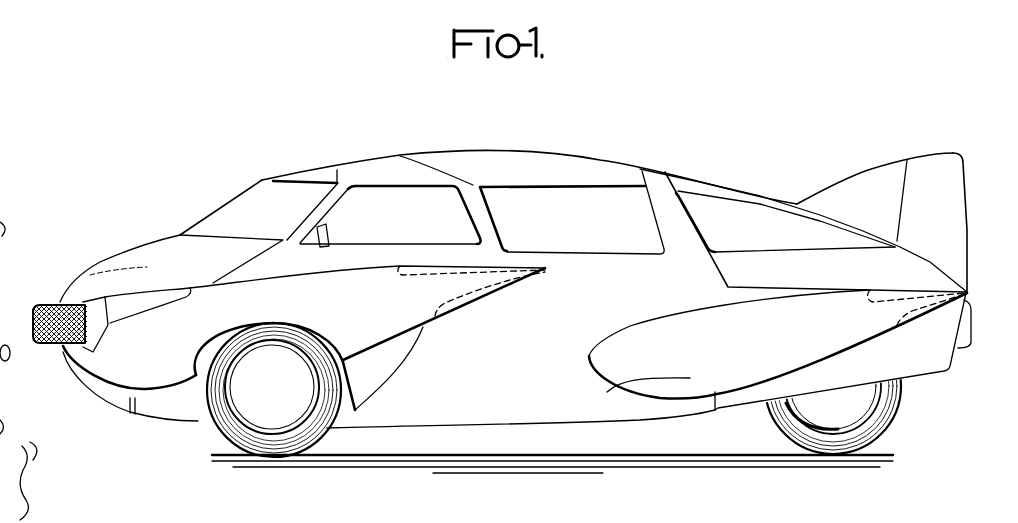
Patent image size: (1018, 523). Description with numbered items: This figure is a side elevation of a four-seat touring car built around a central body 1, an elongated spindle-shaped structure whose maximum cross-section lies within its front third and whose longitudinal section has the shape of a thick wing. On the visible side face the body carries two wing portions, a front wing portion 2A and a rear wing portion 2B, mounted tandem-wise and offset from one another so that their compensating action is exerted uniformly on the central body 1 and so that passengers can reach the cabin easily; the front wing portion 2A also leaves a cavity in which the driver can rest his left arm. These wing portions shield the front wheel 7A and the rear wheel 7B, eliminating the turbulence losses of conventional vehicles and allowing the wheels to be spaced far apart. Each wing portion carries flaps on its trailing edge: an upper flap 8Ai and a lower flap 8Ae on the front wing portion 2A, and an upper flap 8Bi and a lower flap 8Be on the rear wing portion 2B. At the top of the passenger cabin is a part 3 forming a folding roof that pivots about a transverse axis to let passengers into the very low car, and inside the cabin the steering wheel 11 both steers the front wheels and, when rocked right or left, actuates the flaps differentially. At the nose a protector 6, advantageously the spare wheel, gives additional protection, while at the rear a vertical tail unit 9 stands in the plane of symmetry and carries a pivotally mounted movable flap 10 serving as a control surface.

The central body 1 is at (350, 168).
The folding roof 3 is at (527, 170).
The protector 6 is at (54, 306).
The wheel 7A is at (217, 425).
The wheel 7B is at (902, 397).
The front wing portion 2A is at (120, 358).
The rear wing portion 2B is at (619, 391).
The upper flap 8Ai is at (443, 271).
The lower flap 8Ae is at (482, 297).
The upper flap 8Bi is at (900, 297).
The lower flap 8Be is at (921, 313).
The vertical tail unit 9 is at (873, 190).
The movable flap 10 is at (937, 188).
The steering wheel 11 is at (328, 229).